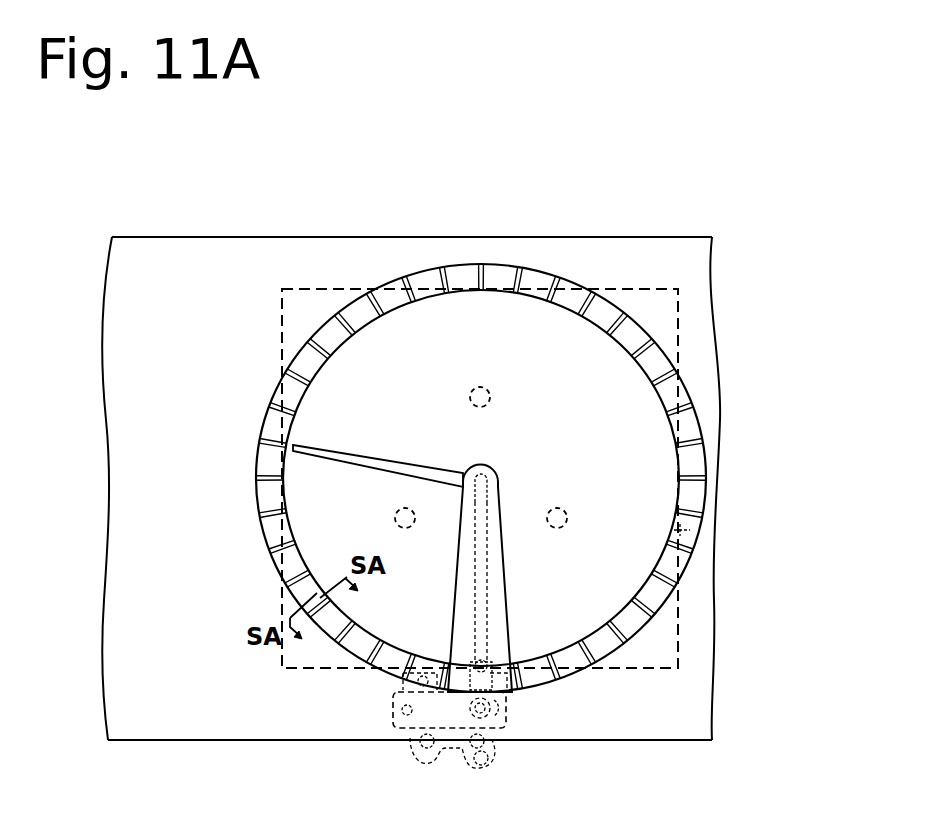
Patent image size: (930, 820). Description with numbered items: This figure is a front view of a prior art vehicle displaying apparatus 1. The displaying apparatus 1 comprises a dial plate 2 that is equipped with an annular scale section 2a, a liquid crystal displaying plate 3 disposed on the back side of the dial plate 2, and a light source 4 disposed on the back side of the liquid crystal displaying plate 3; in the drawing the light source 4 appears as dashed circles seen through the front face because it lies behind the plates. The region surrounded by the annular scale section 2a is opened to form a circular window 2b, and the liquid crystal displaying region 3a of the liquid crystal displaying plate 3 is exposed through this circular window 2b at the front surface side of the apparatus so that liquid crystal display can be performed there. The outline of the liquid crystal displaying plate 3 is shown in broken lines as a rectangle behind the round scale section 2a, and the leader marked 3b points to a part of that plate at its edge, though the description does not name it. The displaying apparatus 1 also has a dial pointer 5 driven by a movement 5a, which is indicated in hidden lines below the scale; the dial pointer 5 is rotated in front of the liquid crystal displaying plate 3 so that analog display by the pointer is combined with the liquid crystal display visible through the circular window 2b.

The displaying apparatus 1 is at (578, 180).
The dial plate 2 is at (707, 394).
The scale section 2a is at (688, 470).
The circular window 2b is at (645, 384).
The liquid crystal displaying plate 3 is at (657, 669).
The liquid crystal displaying region 3a is at (617, 553).
The display panel edge portion 3b is at (692, 531).
The light source 4 is at (490, 397).
The dial pointer 5 is at (400, 458).
The movement 5a is at (507, 707).